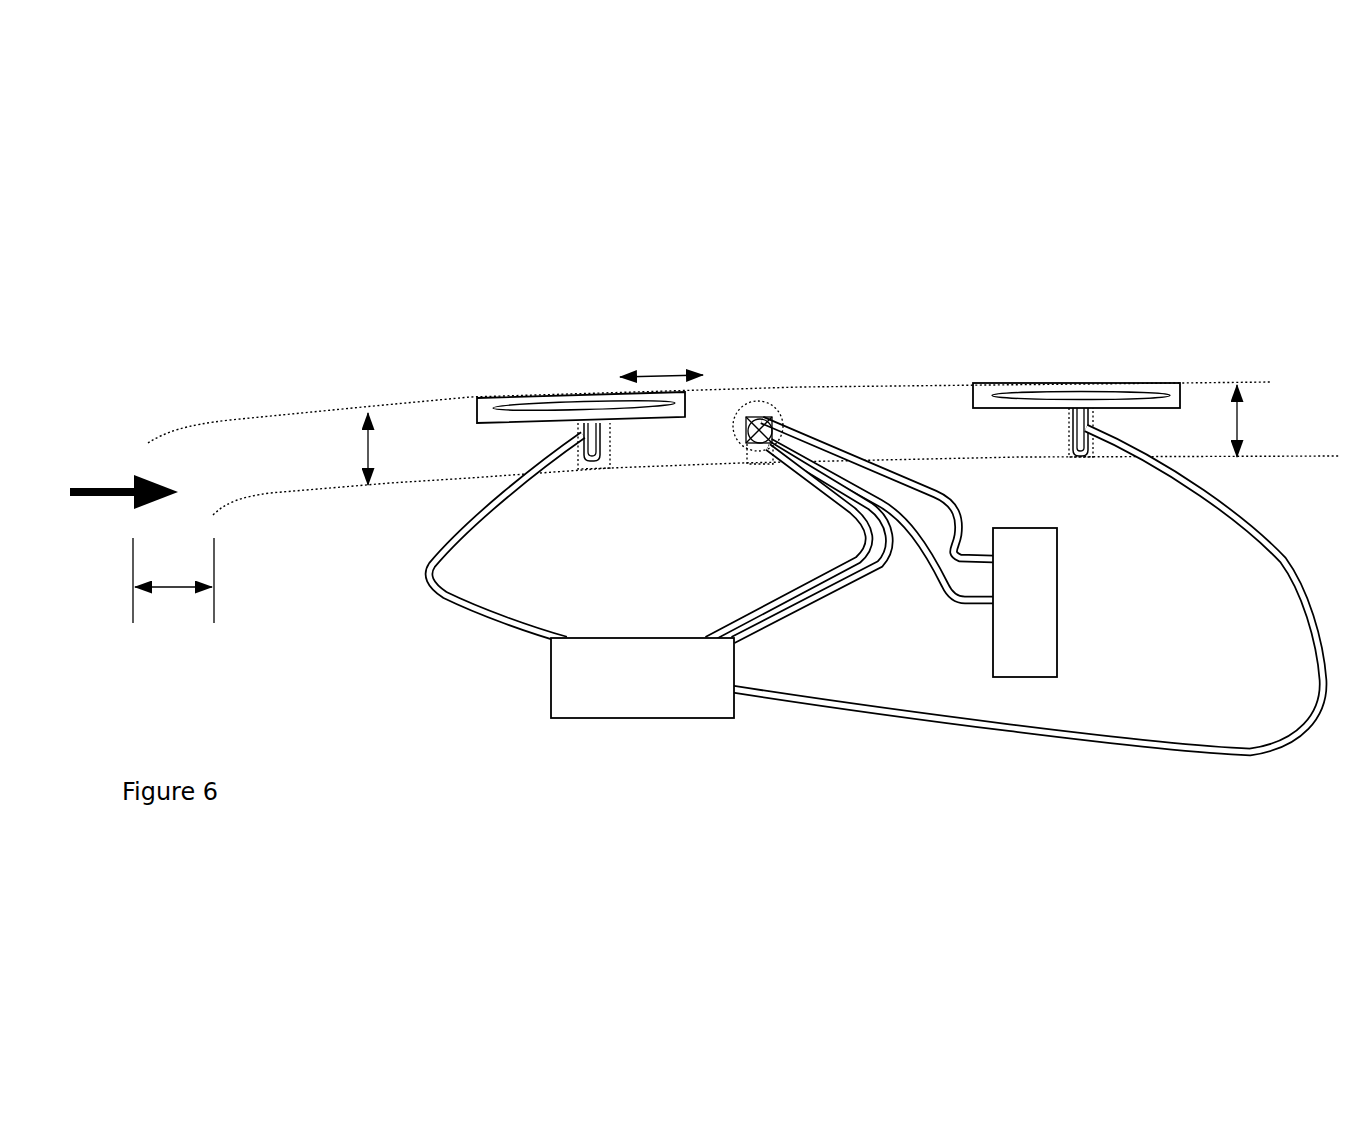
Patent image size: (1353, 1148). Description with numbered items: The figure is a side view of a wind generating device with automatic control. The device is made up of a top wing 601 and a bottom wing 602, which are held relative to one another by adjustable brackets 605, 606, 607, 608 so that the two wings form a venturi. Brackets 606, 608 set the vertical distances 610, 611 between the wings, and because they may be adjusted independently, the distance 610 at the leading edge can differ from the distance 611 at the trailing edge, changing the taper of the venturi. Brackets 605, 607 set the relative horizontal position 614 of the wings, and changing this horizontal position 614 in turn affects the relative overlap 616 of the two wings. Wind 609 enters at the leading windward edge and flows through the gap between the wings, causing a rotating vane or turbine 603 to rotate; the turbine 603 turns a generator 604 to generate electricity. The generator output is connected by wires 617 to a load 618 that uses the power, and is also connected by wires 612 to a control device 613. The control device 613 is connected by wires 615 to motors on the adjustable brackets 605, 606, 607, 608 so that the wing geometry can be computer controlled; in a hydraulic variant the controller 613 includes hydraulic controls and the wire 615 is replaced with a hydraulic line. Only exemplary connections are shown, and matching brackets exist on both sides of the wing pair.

The top wing 601 is at (340, 399).
The bottom wing 602 is at (360, 498).
The rotating vane or turbine 603 is at (788, 420).
The generator 604 is at (740, 441).
The adjustable bracket 605 is at (567, 391).
The adjustable bracket 606 is at (600, 470).
The adjustable bracket 607 is at (1092, 380).
The adjustable bracket 608 is at (1096, 440).
The wind 609 is at (122, 511).
The vertical distance 610 is at (378, 447).
The vertical distance 611 is at (1246, 425).
The wires 612 is at (798, 542).
The control device 613 is at (642, 678).
The relative horizontal position 614 is at (689, 376).
The wires 615 is at (506, 550).
The relative overlap 616 is at (173, 602).
The wires 617 is at (937, 500).
The load 618 is at (1025, 602).